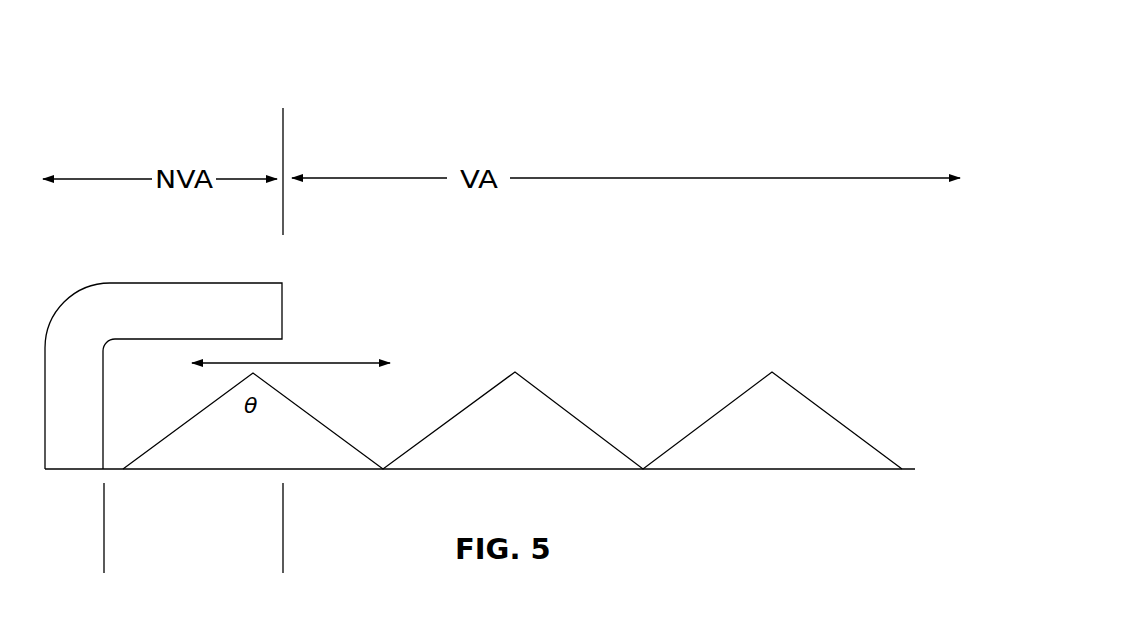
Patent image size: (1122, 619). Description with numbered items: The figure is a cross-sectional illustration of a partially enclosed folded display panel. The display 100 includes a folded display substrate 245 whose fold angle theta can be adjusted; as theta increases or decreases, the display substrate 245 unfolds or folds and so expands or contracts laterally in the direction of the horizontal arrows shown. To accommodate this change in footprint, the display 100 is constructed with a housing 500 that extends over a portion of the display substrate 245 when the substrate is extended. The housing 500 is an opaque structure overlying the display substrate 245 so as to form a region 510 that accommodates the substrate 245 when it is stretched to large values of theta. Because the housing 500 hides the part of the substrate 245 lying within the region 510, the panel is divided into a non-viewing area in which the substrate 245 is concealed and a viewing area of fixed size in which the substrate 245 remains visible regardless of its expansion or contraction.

The display 100 is at (102, 81).
The housing 500 is at (253, 283).
The display substrate 245 is at (718, 410).
The region 510 is at (282, 533).